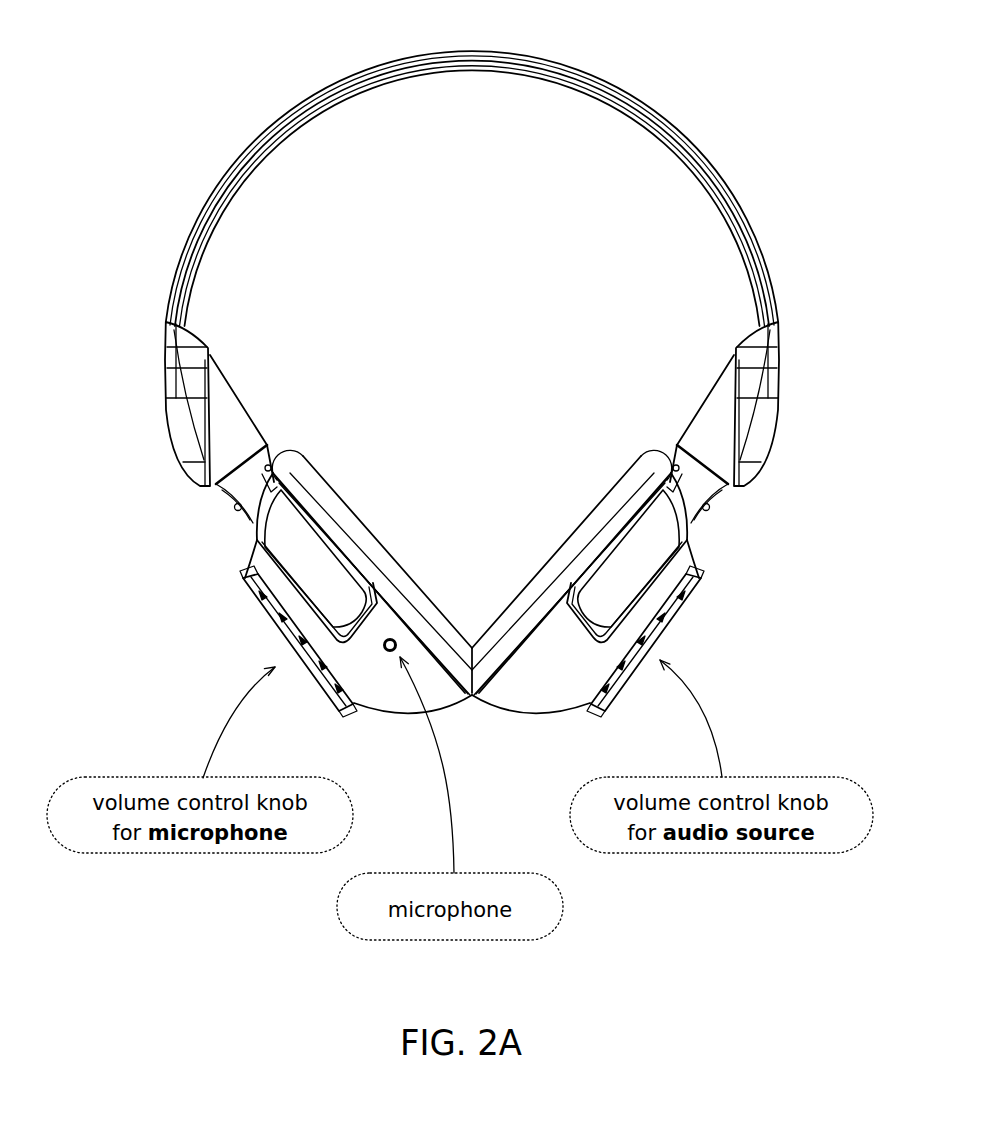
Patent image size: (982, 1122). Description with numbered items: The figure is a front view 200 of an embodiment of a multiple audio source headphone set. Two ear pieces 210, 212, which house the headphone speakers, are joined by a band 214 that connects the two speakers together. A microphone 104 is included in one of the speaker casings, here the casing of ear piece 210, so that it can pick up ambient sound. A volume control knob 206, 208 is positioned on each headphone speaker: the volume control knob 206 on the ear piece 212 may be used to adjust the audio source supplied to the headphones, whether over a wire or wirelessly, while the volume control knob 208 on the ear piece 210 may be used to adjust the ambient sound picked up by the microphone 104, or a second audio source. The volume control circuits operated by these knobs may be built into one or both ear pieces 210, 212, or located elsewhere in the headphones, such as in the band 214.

The front view 200 is at (139, 34).
The band 214 is at (481, 66).
The ear piece 210 is at (256, 560).
The ear piece 212 is at (560, 690).
The volume control knob 208 is at (262, 594).
The volume control knob 206 is at (686, 611).
The microphone 104 is at (395, 654).